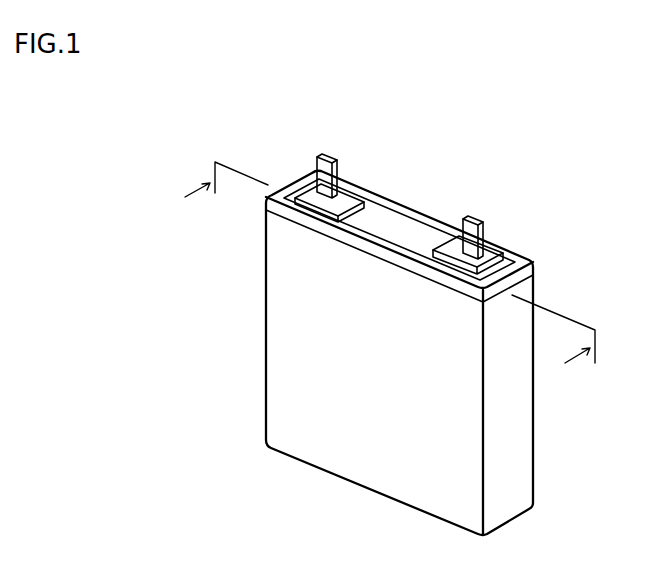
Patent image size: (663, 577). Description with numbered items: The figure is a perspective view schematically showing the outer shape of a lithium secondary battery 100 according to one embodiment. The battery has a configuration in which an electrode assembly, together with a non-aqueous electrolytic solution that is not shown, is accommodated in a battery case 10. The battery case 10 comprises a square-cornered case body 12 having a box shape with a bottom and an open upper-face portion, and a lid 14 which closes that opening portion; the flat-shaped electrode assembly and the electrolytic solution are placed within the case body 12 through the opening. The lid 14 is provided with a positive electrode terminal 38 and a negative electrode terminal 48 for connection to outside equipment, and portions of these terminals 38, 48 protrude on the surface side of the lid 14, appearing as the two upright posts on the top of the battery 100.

The lithium secondary battery 100 is at (173, 86).
The battery case 10 is at (373, 458).
The case body 12 is at (510, 470).
The lid 14 is at (297, 178).
The positive electrode terminal 38 is at (325, 154).
The negative electrode terminal 48 is at (480, 217).